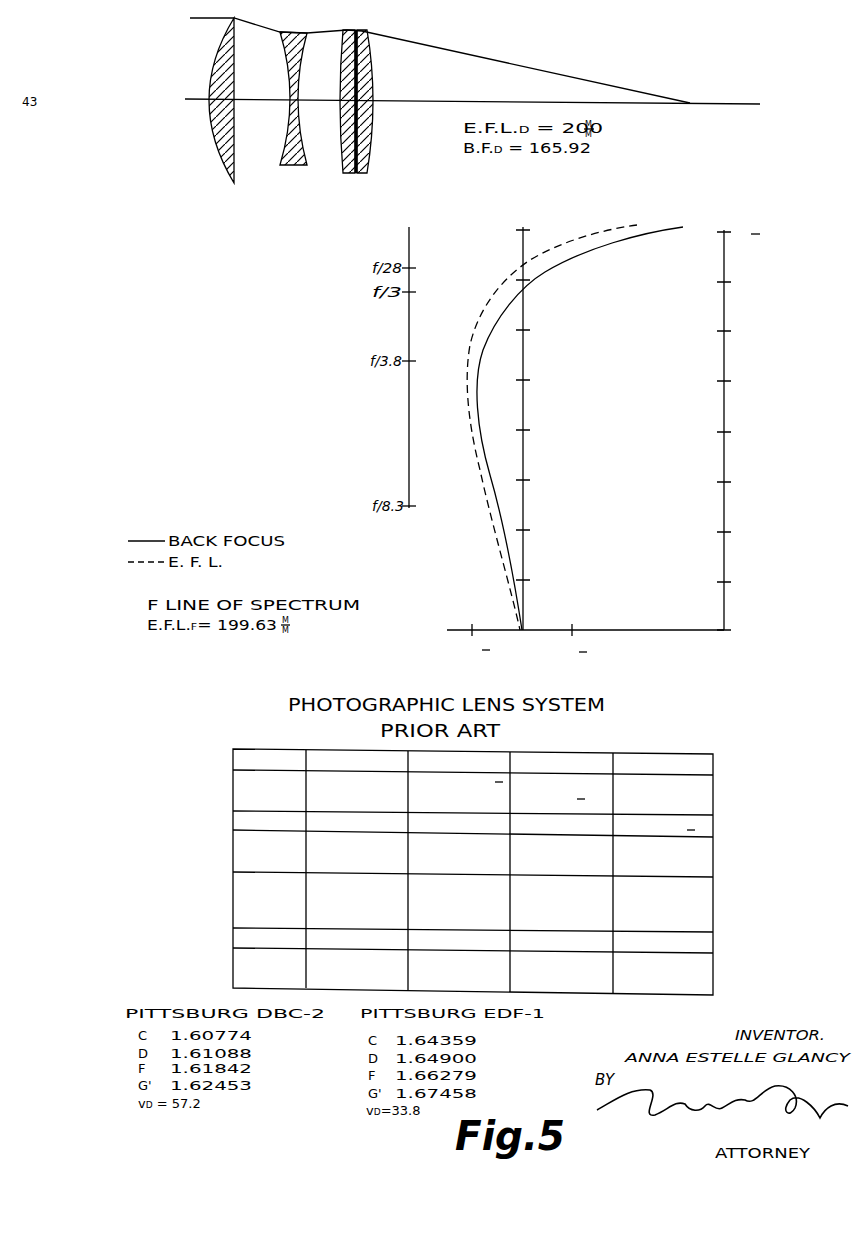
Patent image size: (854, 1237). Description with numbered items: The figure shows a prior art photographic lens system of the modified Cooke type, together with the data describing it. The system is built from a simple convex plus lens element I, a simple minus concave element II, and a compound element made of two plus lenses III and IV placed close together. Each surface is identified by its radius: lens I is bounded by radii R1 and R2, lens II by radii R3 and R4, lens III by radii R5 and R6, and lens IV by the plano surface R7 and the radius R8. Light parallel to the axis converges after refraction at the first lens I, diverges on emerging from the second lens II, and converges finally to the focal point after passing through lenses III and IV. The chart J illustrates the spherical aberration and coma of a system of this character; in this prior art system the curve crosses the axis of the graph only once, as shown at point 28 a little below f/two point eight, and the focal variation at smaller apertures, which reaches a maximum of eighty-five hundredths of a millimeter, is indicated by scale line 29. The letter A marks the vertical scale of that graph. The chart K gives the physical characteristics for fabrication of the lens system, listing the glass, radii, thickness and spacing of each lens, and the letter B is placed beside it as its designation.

The point 28 is at (525, 289).
The scale line 29 is at (447, 632).
The chart J is at (660, 648).
The vertical scale axis A is at (738, 448).
The chart K is at (740, 922).
The table designation B is at (807, 918).
The simple convex plus lens element I is at (222, 107).
The simple minus concave element II is at (293, 114).
The plus lens III is at (346, 113).
The plus lens IV is at (365, 113).
The radius R1 is at (214, 147).
The radius R2 is at (234, 153).
The radius R3 is at (290, 138).
The radius R4 is at (299, 130).
The radius R5 is at (342, 87).
The radius R6 is at (362, 32).
The radius R7 is at (345, 176).
The radius R8 is at (371, 158).